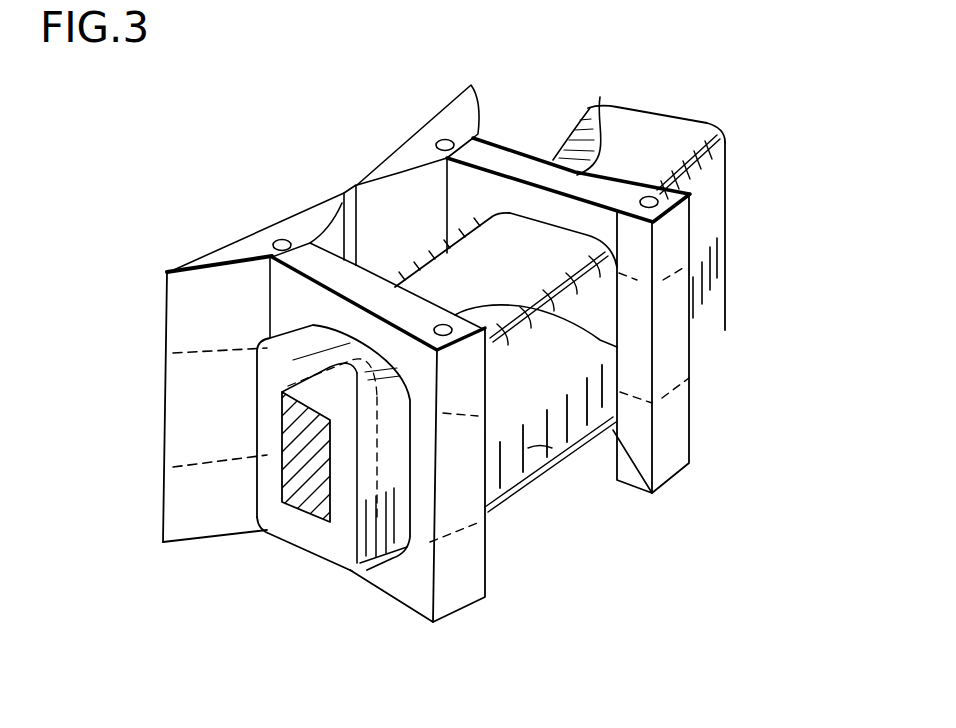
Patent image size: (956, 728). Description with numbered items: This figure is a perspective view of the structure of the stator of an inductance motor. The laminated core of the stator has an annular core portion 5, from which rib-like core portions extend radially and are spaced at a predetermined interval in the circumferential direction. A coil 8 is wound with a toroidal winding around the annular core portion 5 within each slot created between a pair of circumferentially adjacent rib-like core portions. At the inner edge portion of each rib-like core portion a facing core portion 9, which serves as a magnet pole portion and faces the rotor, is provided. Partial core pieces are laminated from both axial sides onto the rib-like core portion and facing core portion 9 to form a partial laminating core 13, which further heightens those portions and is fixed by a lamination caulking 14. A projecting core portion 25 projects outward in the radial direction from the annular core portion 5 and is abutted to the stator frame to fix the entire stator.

The annular core portion 5 is at (303, 487).
The coil 8 is at (714, 222).
The facing core portion 9 is at (165, 432).
The partial laminating core 13 is at (600, 97).
The lamination caulking 14 is at (444, 141).
The projecting core portion 25 is at (670, 368).